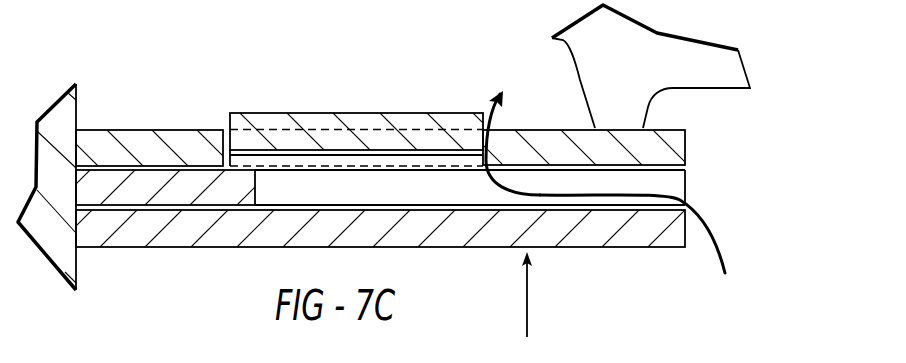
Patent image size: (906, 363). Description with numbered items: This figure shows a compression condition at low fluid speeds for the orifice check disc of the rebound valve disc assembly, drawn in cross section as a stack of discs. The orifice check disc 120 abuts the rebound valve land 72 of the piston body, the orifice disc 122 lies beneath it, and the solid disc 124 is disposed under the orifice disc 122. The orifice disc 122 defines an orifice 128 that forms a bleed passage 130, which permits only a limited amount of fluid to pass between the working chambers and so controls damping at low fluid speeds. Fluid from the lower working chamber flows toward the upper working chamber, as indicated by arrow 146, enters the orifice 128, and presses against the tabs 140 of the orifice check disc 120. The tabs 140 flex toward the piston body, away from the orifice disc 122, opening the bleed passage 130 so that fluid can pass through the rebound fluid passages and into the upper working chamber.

The rebound valve land 72 is at (653, 108).
The orifice check disc 120 is at (132, 129).
The orifice disc 122 is at (187, 183).
The solid disc 124 is at (143, 228).
The orifice 128 is at (658, 182).
The bleed passage 130 is at (727, 248).
The tabs 140 is at (358, 113).
The arrow 146 is at (527, 302).